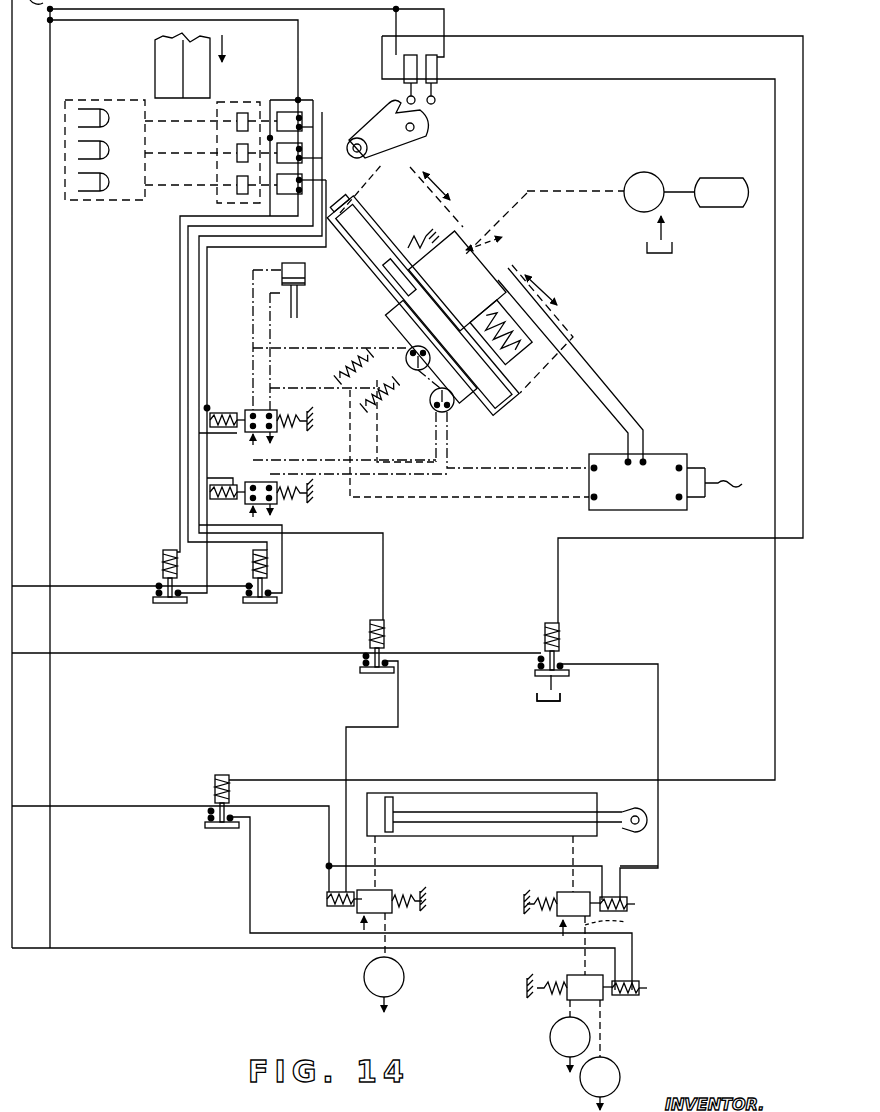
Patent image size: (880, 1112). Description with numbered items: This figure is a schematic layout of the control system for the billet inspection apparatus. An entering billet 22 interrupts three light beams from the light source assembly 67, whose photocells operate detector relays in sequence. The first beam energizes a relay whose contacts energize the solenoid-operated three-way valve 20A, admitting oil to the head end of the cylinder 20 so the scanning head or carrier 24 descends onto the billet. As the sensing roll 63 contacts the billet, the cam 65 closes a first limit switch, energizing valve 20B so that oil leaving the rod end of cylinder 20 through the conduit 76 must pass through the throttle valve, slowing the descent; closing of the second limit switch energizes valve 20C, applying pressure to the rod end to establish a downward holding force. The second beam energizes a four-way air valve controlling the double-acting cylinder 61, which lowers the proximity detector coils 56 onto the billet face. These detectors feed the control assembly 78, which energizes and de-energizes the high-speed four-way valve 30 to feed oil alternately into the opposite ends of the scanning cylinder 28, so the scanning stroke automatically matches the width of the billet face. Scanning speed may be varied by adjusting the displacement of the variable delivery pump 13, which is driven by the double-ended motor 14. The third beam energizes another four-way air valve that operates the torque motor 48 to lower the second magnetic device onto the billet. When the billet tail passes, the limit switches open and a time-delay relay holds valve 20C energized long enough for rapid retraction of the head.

The high-pressure oil pump 13 is at (630, 178).
The double-ended motor 14 is at (722, 182).
The cylinder 20 is at (590, 806).
The solenoid-operated three-way valve 20A is at (428, 886).
The solenoid valve 20B is at (572, 977).
The solenoid-operated three-way valve 20C is at (562, 893).
The billet 22 is at (165, 56).
The carrier 24 is at (392, 233).
The cylinder 28 is at (470, 353).
The four-way valve 30 is at (495, 265).
The torque motor 48 is at (413, 348).
The coil 56 is at (344, 366).
The double-acting cylinder 61 is at (302, 284).
The sensing roll 63 is at (398, 154).
The cam 65 is at (432, 116).
The light source assembly 67 is at (108, 100).
The conduit 76 is at (618, 924).
The control assembly 78 is at (656, 460).